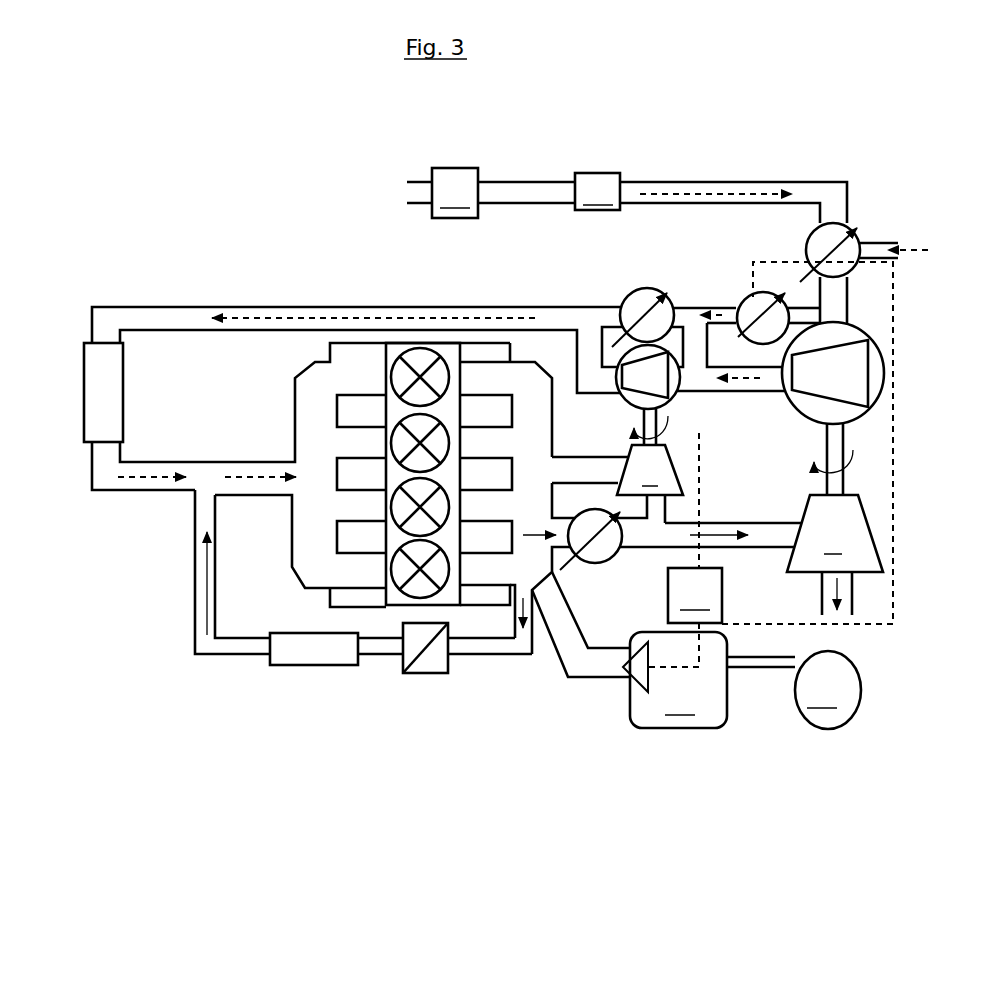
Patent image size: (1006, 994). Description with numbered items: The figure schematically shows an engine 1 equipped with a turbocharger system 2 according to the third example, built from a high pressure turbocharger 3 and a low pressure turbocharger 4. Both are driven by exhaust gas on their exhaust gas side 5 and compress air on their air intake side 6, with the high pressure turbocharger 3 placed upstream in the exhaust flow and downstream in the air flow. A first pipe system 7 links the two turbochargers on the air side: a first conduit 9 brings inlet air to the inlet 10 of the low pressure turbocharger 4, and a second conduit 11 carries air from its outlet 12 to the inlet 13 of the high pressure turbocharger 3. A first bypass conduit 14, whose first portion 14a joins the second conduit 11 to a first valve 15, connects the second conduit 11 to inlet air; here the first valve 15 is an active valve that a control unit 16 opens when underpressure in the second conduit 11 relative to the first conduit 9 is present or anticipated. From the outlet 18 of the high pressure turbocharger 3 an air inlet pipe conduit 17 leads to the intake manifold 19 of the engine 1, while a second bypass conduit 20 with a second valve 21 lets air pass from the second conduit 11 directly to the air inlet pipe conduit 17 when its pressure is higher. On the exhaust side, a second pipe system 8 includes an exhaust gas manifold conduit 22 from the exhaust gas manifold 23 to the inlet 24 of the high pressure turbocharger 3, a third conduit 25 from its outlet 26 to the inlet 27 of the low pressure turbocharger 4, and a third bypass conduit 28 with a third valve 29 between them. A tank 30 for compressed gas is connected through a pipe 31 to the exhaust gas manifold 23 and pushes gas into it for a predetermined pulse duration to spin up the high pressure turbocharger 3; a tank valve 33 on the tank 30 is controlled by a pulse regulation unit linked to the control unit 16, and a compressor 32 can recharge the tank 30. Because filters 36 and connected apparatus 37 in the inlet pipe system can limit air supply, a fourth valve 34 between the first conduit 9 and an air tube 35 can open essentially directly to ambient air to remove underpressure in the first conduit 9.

The engine 1 is at (385, 606).
The turbocharger system 2 is at (200, 183).
The high pressure turbocharger 3 is at (640, 391).
The low pressure turbocharger 4 is at (824, 389).
The exhaust gas side 5 is at (784, 738).
The air intake side 6 is at (311, 221).
The first pipe system 7 is at (703, 296).
The second pipe system 8 is at (743, 558).
The first conduit 9 is at (858, 311).
The inlet 10 is at (872, 338).
The second conduit 11 is at (726, 400).
The outlet 12 is at (782, 397).
The inlet 13 is at (680, 405).
The first bypass conduit 14 is at (814, 312).
The first portion 14a is at (724, 298).
The first valve 15 is at (763, 281).
The control unit 16 is at (770, 464).
The air inlet pipe conduit 17 is at (506, 299).
The outlet 18 is at (608, 359).
The intake manifold 19 is at (298, 454).
The second bypass conduit 20 is at (604, 297).
The second valve 21 is at (646, 279).
The exhaust gas manifold conduit 22 is at (590, 467).
The exhaust gas manifold 23 is at (505, 454).
The inlet 24 is at (616, 447).
The third conduit 25 is at (650, 508).
The outlet 26 is at (658, 533).
The inlet 27 is at (806, 544).
The third bypass conduit 28 is at (560, 547).
The third valve 29 is at (591, 572).
The tank 30 is at (678, 680).
The pipe 31 is at (611, 688).
The compressor 32 is at (828, 690).
The tank valve 33 is at (640, 690).
The fourth valve 34 is at (866, 226).
The air tube 35 is at (909, 238).
The filters 36 is at (597, 191).
The connected apparatus 37 is at (455, 193).